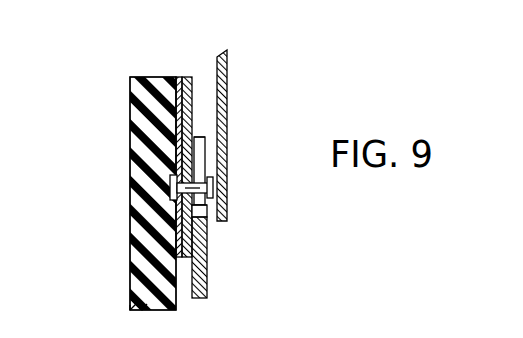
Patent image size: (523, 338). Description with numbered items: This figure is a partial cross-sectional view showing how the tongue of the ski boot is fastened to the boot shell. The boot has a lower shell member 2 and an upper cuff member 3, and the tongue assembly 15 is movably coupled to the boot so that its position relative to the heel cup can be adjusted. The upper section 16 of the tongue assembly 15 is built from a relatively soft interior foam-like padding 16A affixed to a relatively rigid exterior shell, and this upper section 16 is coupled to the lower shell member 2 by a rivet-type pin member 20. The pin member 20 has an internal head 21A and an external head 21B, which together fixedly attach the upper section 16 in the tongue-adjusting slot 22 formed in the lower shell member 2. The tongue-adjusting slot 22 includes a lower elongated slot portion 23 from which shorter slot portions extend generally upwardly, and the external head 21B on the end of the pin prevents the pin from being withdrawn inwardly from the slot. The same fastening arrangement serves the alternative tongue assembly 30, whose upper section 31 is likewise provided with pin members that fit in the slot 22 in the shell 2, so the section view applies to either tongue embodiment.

The lower shell member 2 is at (216, 274).
The upper cuff member 3 is at (227, 73).
The tongue assembly 15 is at (122, 267).
The upper section 16 is at (137, 225).
The padding 16A is at (130, 131).
The pin member 20 is at (166, 77).
The internal head 21A is at (168, 190).
The external head 21B is at (214, 180).
The tongue-adjusting slot 22 is at (214, 197).
The lower elongated slot portion 23 is at (215, 207).
The tongue assembly 30 is at (212, 102).
The upper section 31 is at (197, 122).